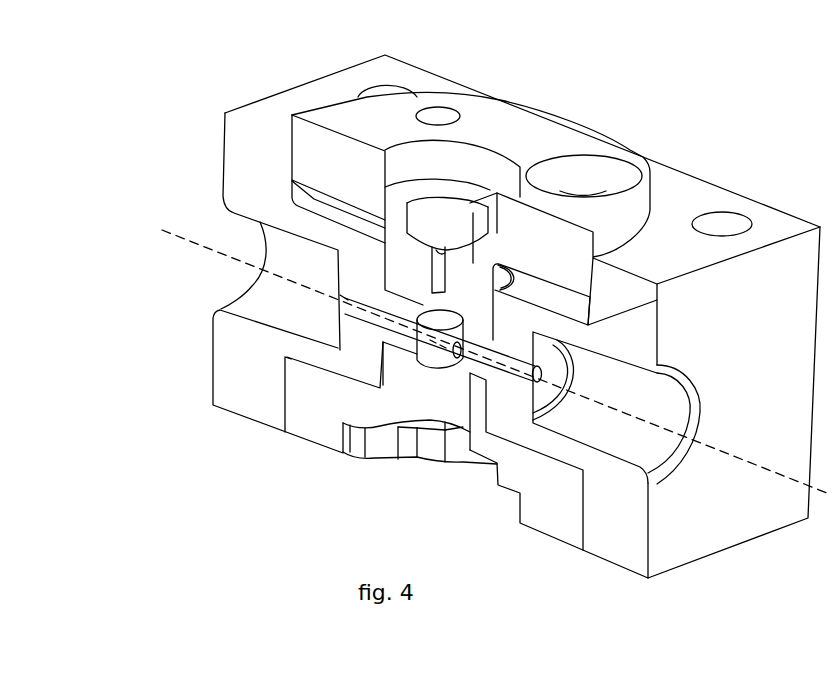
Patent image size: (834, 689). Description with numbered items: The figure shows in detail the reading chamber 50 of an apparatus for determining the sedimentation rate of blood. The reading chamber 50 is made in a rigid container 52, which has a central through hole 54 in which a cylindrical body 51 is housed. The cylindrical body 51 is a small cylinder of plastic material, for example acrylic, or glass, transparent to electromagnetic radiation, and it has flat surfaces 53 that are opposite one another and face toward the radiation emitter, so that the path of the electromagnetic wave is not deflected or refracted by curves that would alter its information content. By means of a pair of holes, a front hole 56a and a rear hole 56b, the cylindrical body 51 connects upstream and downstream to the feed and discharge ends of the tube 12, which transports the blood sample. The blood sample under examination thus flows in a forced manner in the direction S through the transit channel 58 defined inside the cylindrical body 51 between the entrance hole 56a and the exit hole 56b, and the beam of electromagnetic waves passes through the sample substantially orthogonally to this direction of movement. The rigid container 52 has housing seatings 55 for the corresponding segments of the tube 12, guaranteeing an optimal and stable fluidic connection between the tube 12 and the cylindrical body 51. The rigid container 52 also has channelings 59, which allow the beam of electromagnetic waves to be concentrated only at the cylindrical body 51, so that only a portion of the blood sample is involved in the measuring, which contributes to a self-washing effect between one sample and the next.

The tube 12 is at (367, 322).
The reading chamber 50 is at (420, 303).
The cylindrical body 51 is at (472, 331).
The rigid container 52 is at (705, 198).
The flat surfaces 53 is at (448, 318).
The central through hole 54 is at (458, 249).
The housing seatings 55 is at (342, 303).
The front hole 56a is at (408, 348).
The rear hole 56b is at (458, 362).
The transit channel 58 is at (420, 345).
The channelings 59 is at (441, 247).
The direction S is at (727, 455).